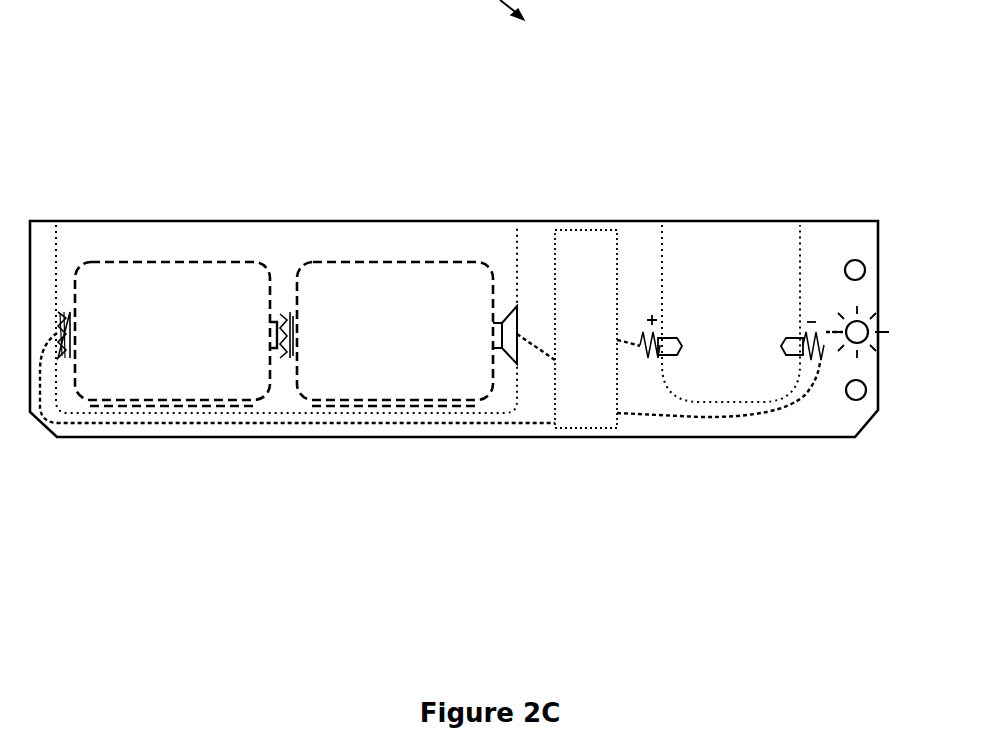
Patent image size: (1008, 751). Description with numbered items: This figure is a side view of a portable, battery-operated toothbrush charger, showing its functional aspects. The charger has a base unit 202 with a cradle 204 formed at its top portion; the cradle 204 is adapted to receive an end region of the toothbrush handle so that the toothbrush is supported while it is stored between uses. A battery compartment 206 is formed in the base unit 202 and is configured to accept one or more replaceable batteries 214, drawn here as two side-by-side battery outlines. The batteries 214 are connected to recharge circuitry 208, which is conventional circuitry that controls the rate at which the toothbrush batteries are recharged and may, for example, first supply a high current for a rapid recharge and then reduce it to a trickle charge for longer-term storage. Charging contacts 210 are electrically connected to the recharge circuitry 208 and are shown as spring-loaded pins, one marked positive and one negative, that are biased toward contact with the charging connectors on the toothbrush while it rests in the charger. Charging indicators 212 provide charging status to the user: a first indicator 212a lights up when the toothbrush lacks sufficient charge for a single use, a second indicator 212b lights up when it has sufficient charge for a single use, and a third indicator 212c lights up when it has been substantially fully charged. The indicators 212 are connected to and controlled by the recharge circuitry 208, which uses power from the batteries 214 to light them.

The base unit 202 is at (43, 247).
The cradle 204 is at (688, 215).
The battery compartment 206 is at (416, 220).
The recharge circuitry 208 is at (590, 413).
The charging contacts 210 is at (797, 338).
The charging indicators 212 is at (795, 337).
The first indicator 212a is at (848, 257).
The second indicator 212b is at (851, 344).
The third indicator 212c is at (859, 400).
The replaceable batteries 214 is at (379, 297).